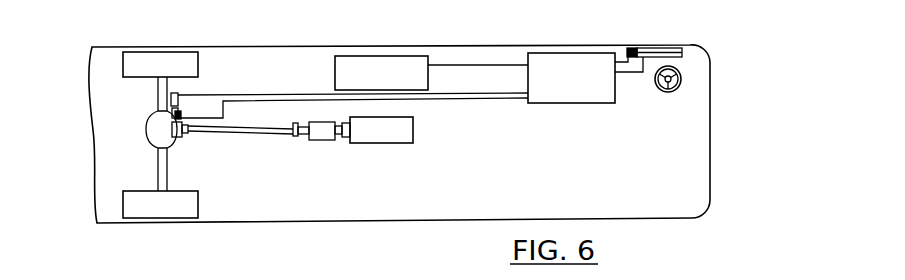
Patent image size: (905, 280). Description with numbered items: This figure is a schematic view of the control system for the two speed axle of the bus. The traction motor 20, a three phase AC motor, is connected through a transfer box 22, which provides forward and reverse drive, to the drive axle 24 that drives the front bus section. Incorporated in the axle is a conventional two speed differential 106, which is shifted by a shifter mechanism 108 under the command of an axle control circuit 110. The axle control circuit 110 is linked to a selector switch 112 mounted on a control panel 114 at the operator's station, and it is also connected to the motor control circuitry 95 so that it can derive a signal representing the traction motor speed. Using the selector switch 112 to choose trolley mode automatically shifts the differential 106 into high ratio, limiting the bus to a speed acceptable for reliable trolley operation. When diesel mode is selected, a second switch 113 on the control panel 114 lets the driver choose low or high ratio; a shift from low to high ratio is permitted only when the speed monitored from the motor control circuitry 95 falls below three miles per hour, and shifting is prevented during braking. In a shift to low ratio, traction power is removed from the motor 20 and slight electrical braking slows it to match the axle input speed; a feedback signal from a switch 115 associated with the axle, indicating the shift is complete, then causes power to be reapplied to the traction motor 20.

The traction motor 20 is at (397, 143).
The transfer box 22 is at (324, 141).
The drive axle 24 is at (160, 175).
The motor control circuitry 95 is at (413, 62).
The two speed differential 106 is at (153, 130).
The shifter mechanism 108 is at (181, 96).
The axle control circuit 110 is at (598, 56).
The selector switch 112 is at (632, 47).
The second switch 113 is at (649, 47).
The control panel 114 is at (688, 46).
The switch 115 is at (180, 118).